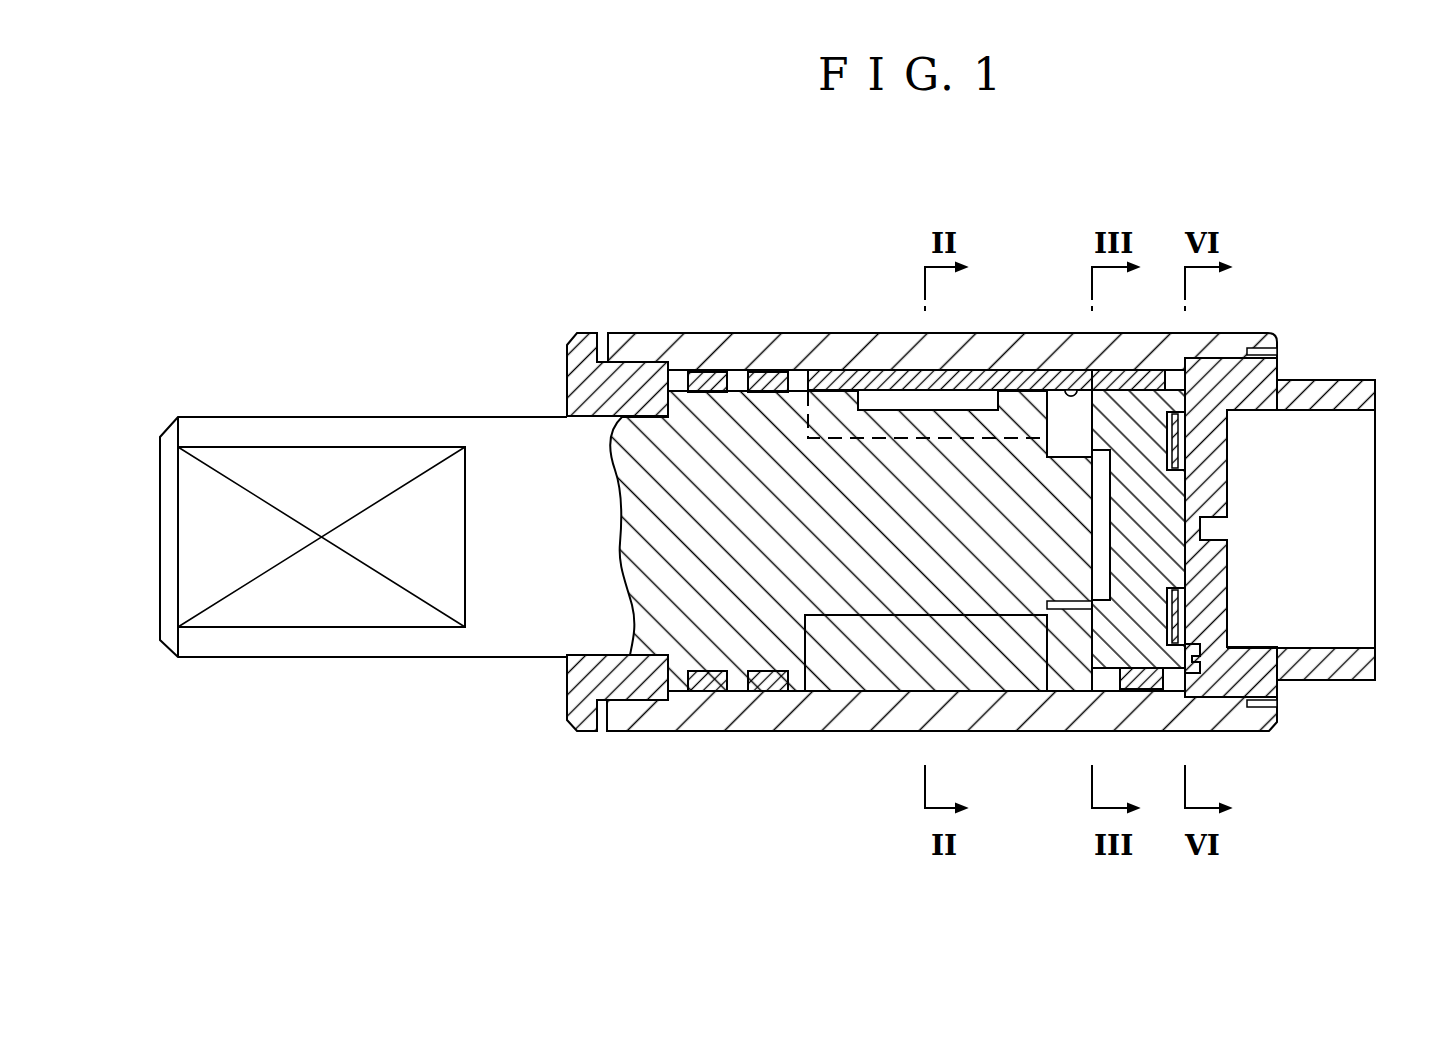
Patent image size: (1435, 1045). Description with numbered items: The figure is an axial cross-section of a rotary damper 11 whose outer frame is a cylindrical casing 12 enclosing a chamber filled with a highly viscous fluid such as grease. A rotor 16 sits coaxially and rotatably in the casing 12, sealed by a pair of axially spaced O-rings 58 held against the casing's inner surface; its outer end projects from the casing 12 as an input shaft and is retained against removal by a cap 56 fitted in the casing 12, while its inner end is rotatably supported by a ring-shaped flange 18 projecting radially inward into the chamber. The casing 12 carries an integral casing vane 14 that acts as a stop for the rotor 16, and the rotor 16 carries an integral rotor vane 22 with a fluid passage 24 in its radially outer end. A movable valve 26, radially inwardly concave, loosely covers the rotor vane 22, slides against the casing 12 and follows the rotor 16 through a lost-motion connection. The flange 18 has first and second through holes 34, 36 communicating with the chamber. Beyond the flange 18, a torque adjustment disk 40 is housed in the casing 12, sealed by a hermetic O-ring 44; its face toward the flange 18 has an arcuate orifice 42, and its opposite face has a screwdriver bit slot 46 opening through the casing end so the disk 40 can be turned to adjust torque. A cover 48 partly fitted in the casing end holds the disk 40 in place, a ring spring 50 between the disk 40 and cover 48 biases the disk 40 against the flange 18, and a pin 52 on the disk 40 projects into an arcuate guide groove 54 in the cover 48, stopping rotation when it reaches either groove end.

The rotary damper 11 is at (570, 191).
The cylindrical casing 12 is at (660, 338).
The casing vane 14 is at (858, 668).
The rotor 16 is at (505, 615).
The ring-shaped flange 18 is at (1073, 435).
The rotor vane 22 is at (837, 402).
The fluid passage 24 is at (977, 400).
The movable valve 26 is at (843, 378).
The first through hole 34 is at (1070, 386).
The second through hole 36 is at (1071, 386).
The torque adjustment disk 40 is at (1195, 496).
The orifice 42 is at (1118, 371).
The hermetic O-ring 44 is at (1140, 690).
The screwdriver bit slot 46 is at (1216, 531).
The cover 48 is at (1340, 400).
The ring spring 50 is at (1180, 435).
The pin 52 is at (1196, 664).
The arcuate guide groove 54 is at (1210, 642).
The cap 56 is at (567, 382).
The O-rings 58 is at (766, 692).